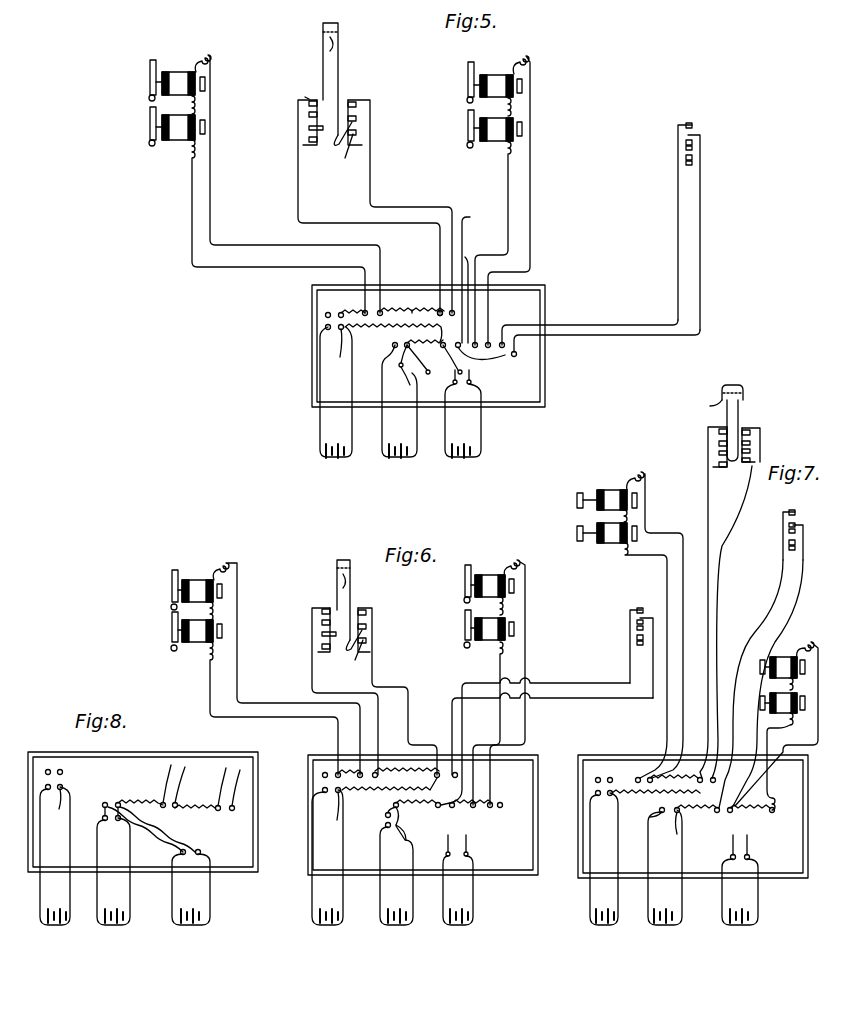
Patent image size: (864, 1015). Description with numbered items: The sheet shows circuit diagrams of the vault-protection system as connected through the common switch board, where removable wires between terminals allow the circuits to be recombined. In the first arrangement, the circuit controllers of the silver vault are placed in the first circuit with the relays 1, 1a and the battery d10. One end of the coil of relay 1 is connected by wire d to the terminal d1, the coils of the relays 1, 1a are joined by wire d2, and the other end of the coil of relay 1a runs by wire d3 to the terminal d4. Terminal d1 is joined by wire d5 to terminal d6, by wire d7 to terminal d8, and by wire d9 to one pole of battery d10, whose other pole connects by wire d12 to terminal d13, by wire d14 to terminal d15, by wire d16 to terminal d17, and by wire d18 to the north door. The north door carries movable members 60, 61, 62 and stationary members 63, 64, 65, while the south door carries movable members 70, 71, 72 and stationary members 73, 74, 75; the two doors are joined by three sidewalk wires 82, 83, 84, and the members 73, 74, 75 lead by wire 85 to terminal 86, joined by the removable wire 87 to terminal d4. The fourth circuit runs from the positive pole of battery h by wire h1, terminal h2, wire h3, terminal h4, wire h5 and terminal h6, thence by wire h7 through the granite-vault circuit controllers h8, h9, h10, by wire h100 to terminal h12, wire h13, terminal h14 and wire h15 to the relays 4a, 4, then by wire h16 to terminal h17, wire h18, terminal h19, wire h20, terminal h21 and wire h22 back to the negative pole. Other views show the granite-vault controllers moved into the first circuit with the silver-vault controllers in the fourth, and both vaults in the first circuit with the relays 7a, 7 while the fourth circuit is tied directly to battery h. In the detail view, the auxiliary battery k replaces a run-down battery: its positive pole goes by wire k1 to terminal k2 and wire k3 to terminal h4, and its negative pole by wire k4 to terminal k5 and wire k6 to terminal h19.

In FIG. 5, the relay 1a is at (177, 80).
In FIG. 6, the relay 1a is at (196, 590).
In FIG. 5, the relay 1 is at (177, 126).
In FIG. 6, the relay 1 is at (196, 626).
In FIG. 5, the wire d2 is at (197, 106).
In FIG. 5, the wire d is at (192, 247).
In FIG. 6, the wire d is at (212, 713).
In FIG. 7, the wire d is at (667, 714).
In FIG. 5, the wire d3 is at (240, 245).
In FIG. 6, the wire d3 is at (262, 703).
In FIG. 7, the wire d3 is at (686, 703).
In FIG. 5, the wire 82 is at (338, 23).
In FIG. 6, the wire 82 is at (345, 591).
In FIG. 7, the wire 82 is at (735, 385).
In FIG. 5, the wire 83 is at (323, 32).
In FIG. 6, the wire 83 is at (350, 568).
In FIG. 7, the wire 83 is at (743, 393).
In FIG. 5, the wire 84 is at (334, 41).
In FIG. 6, the wire 84 is at (343, 580).
In FIG. 7, the wire 84 is at (710, 405).
In FIG. 5, the wire 85 is at (440, 250).
In FIG. 6, the wire 85 is at (312, 690).
In FIG. 7, the wire 85 is at (708, 520).
In FIG. 5, the movable member 70 is at (314, 100).
In FIG. 6, the movable member 70 is at (325, 603).
In FIG. 7, the movable member 70 is at (719, 432).
In FIG. 5, the movable member 71 is at (318, 128).
In FIG. 6, the movable member 71 is at (322, 634).
In FIG. 7, the movable member 71 is at (719, 453).
In FIG. 5, the movable member 72 is at (310, 146).
In FIG. 6, the movable member 72 is at (326, 637).
In FIG. 7, the movable member 72 is at (715, 470).
In FIG. 5, the stationary member 73 is at (305, 98).
In FIG. 6, the stationary member 73 is at (322, 610).
In FIG. 7, the stationary member 73 is at (718, 428).
In FIG. 5, the stationary member 74 is at (309, 110).
In FIG. 6, the stationary member 74 is at (322, 623).
In FIG. 7, the stationary member 74 is at (719, 444).
In FIG. 5, the stationary member 75 is at (309, 139).
In FIG. 6, the stationary member 75 is at (322, 647).
In FIG. 7, the stationary member 75 is at (719, 466).
In FIG. 5, the movable member 60 is at (356, 104).
In FIG. 6, the movable member 60 is at (366, 612).
In FIG. 7, the movable member 60 is at (750, 433).
In FIG. 5, the movable member 61 is at (356, 118).
In FIG. 6, the movable member 61 is at (366, 625).
In FIG. 7, the movable member 61 is at (750, 452).
In FIG. 5, the movable member 62 is at (356, 132).
In FIG. 6, the movable member 62 is at (366, 640).
In FIG. 7, the movable member 62 is at (756, 478).
In FIG. 5, the stationary member 63 is at (350, 100).
In FIG. 6, the stationary member 63 is at (362, 608).
In FIG. 7, the stationary member 63 is at (752, 428).
In FIG. 5, the stationary member 64 is at (334, 144).
In FIG. 6, the stationary member 64 is at (350, 638).
In FIG. 7, the stationary member 64 is at (750, 444).
In FIG. 5, the stationary member 65 is at (351, 136).
In FIG. 6, the stationary member 65 is at (358, 637).
In FIG. 7, the stationary member 65 is at (745, 465).
In FIG. 5, the relay 4a is at (494, 82).
In FIG. 6, the relay 4a is at (489, 584).
In FIG. 7, the relay 4a is at (782, 667).
In FIG. 5, the relay 4 is at (494, 123).
In FIG. 6, the relay 4 is at (489, 622).
In FIG. 7, the relay 4 is at (782, 695).
In FIG. 7, the relay coil 7a is at (607, 500).
In FIG. 7, the relay coil 7 is at (607, 526).
In FIG. 5, the circuit controller h8 is at (692, 158).
In FIG. 6, the circuit controller h8 is at (640, 638).
In FIG. 7, the circuit controller h8 is at (789, 547).
In FIG. 5, the circuit controller h9 is at (692, 144).
In FIG. 6, the circuit controller h9 is at (640, 623).
In FIG. 7, the circuit controller h9 is at (789, 530).
In FIG. 5, the circuit controller h10 is at (693, 124).
In FIG. 6, the circuit controller h10 is at (640, 610).
In FIG. 7, the circuit controller h10 is at (795, 513).
In FIG. 5, the wire h100 is at (612, 320).
In FIG. 6, the wire h100 is at (568, 683).
In FIG. 7, the wire h100 is at (748, 633).
In FIG. 5, the wire h7 is at (617, 335).
In FIG. 6, the wire h7 is at (562, 699).
In FIG. 7, the wire h7 is at (790, 629).
In FIG. 5, the wire h15 is at (530, 240).
In FIG. 6, the wire h15 is at (526, 648).
In FIG. 7, the wire h15 is at (806, 745).
In FIG. 5, the wire h16 is at (517, 236).
In FIG. 6, the wire h16 is at (503, 661).
In FIG. 7, the wire h16 is at (770, 729).
In FIG. 5, the terminal d17 is at (470, 289).
In FIG. 6, the terminal d17 is at (501, 807).
In FIG. 5, the wire d18 is at (475, 273).
In FIG. 6, the wire d18 is at (408, 693).
In FIG. 7, the wire d18 is at (723, 548).
In FIG. 5, the terminal d1 is at (377, 304).
In FIG. 6, the terminal d1 is at (358, 771).
In FIG. 7, the terminal d1 is at (636, 777).
In FIG. 5, the terminal d4 is at (412, 318).
In FIG. 6, the terminal d4 is at (406, 765).
In FIG. 7, the terminal d4 is at (650, 777).
In FIG. 5, the wire d5 is at (338, 312).
In FIG. 6, the wire d5 is at (336, 772).
In FIG. 5, the terminal d6 is at (325, 316).
In FIG. 6, the terminal d6 is at (322, 776).
In FIG. 7, the terminal d6 is at (595, 780).
In FIG. 8, the terminal d6 is at (44, 764).
In FIG. 5, the wire d7 is at (325, 328).
In FIG. 6, the wire d7 is at (322, 791).
In FIG. 7, the wire d7 is at (598, 793).
In FIG. 8, the wire d7 is at (45, 775).
In FIG. 5, the terminal d8 is at (320, 330).
In FIG. 6, the terminal d8 is at (332, 793).
In FIG. 8, the terminal d8 is at (45, 788).
In FIG. 5, the wire d9 is at (320, 375).
In FIG. 6, the wire d9 is at (312, 888).
In FIG. 7, the wire d9 is at (590, 896).
In FIG. 8, the wire d9 is at (40, 893).
In FIG. 5, the battery d10 is at (331, 463).
In FIG. 6, the battery d10 is at (329, 926).
In FIG. 7, the battery d10 is at (610, 926).
In FIG. 8, the battery d10 is at (52, 923).
In FIG. 5, the wire d12 is at (352, 425).
In FIG. 6, the wire d12 is at (343, 892).
In FIG. 7, the wire d12 is at (618, 896).
In FIG. 8, the wire d12 is at (70, 893).
In FIG. 5, the terminal d13 is at (343, 352).
In FIG. 6, the terminal d13 is at (336, 806).
In FIG. 7, the terminal d13 is at (610, 793).
In FIG. 8, the terminal d13 is at (60, 802).
In FIG. 5, the wire d14 is at (392, 345).
In FIG. 8, the wire d14 is at (71, 782).
In FIG. 7, the terminal d15 is at (609, 777).
In FIG. 8, the terminal d15 is at (68, 764).
In FIG. 5, the wire d16 is at (362, 296).
In FIG. 5, the terminal 86 is at (439, 310).
In FIG. 5, the removable wire 87 is at (412, 308).
In FIG. 5, the battery h is at (399, 463).
In FIG. 6, the battery h is at (397, 928).
In FIG. 7, the battery h is at (669, 927).
In FIG. 8, the battery h is at (115, 923).
In FIG. 5, the wire h1 is at (417, 430).
In FIG. 6, the wire h1 is at (413, 892).
In FIG. 7, the wire h1 is at (682, 896).
In FIG. 8, the wire h1 is at (130, 893).
In FIG. 5, the terminal h2 is at (407, 383).
In FIG. 6, the terminal h2 is at (402, 843).
In FIG. 7, the terminal h2 is at (676, 838).
In FIG. 8, the terminal h2 is at (117, 821).
In FIG. 5, the wire h3 is at (399, 364).
In FIG. 6, the wire h3 is at (398, 824).
In FIG. 5, the terminal h4 is at (421, 368).
In FIG. 6, the terminal h4 is at (411, 796).
In FIG. 7, the terminal h4 is at (668, 827).
In FIG. 8, the terminal h4 is at (120, 803).
In FIG. 5, the wire h5 is at (478, 362).
In FIG. 6, the wire h5 is at (372, 788).
In FIG. 7, the wire h5 is at (630, 793).
In FIG. 5, the terminal h6 is at (513, 357).
In FIG. 6, the terminal h6 is at (462, 769).
In FIG. 7, the terminal h6 is at (716, 779).
In FIG. 5, the terminal h12 is at (502, 342).
In FIG. 6, the terminal h12 is at (427, 765).
In FIG. 7, the terminal h12 is at (692, 784).
In FIG. 5, the wire h13 is at (488, 340).
In FIG. 6, the terminal h14 is at (476, 815).
In FIG. 7, the terminal h14 is at (727, 815).
In FIG. 5, the terminal h17 is at (452, 361).
In FIG. 6, the terminal h17 is at (434, 796).
In FIG. 7, the terminal h17 is at (700, 801).
In FIG. 5, the wire h18 is at (426, 335).
In FIG. 5, the terminal h19 is at (396, 337).
In FIG. 6, the terminal h19 is at (386, 814).
In FIG. 7, the terminal h19 is at (652, 810).
In FIG. 8, the terminal h19 is at (104, 803).
In FIG. 5, the wire h20 is at (385, 365).
In FIG. 6, the wire h20 is at (385, 826).
In FIG. 5, the terminal h21 is at (382, 390).
In FIG. 6, the terminal h21 is at (382, 831).
In FIG. 7, the terminal h21 is at (658, 820).
In FIG. 8, the terminal h21 is at (102, 819).
In FIG. 5, the wire h22 is at (382, 421).
In FIG. 6, the wire h22 is at (380, 860).
In FIG. 7, the wire h22 is at (648, 901).
In FIG. 8, the wire h22 is at (97, 901).
In FIG. 5, the auxiliary battery k is at (462, 465).
In FIG. 6, the auxiliary battery k is at (458, 926).
In FIG. 7, the auxiliary battery k is at (745, 927).
In FIG. 8, the auxiliary battery k is at (190, 927).
In FIG. 5, the wire k1 is at (481, 430).
In FIG. 6, the wire k1 is at (473, 892).
In FIG. 7, the wire k1 is at (758, 899).
In FIG. 8, the wire k1 is at (210, 897).
In FIG. 5, the terminal k2 is at (470, 386).
In FIG. 6, the terminal k2 is at (467, 852).
In FIG. 8, the terminal k2 is at (201, 852).
In FIG. 8, the wire k3 is at (190, 843).
In FIG. 5, the wire k4 is at (445, 430).
In FIG. 6, the wire k4 is at (443, 895).
In FIG. 7, the wire k4 is at (722, 901).
In FIG. 8, the wire k4 is at (172, 899).
In FIG. 5, the terminal k5 is at (463, 413).
In FIG. 6, the terminal k5 is at (446, 853).
In FIG. 8, the terminal k5 is at (191, 889).
In FIG. 8, the wire k6 is at (158, 841).